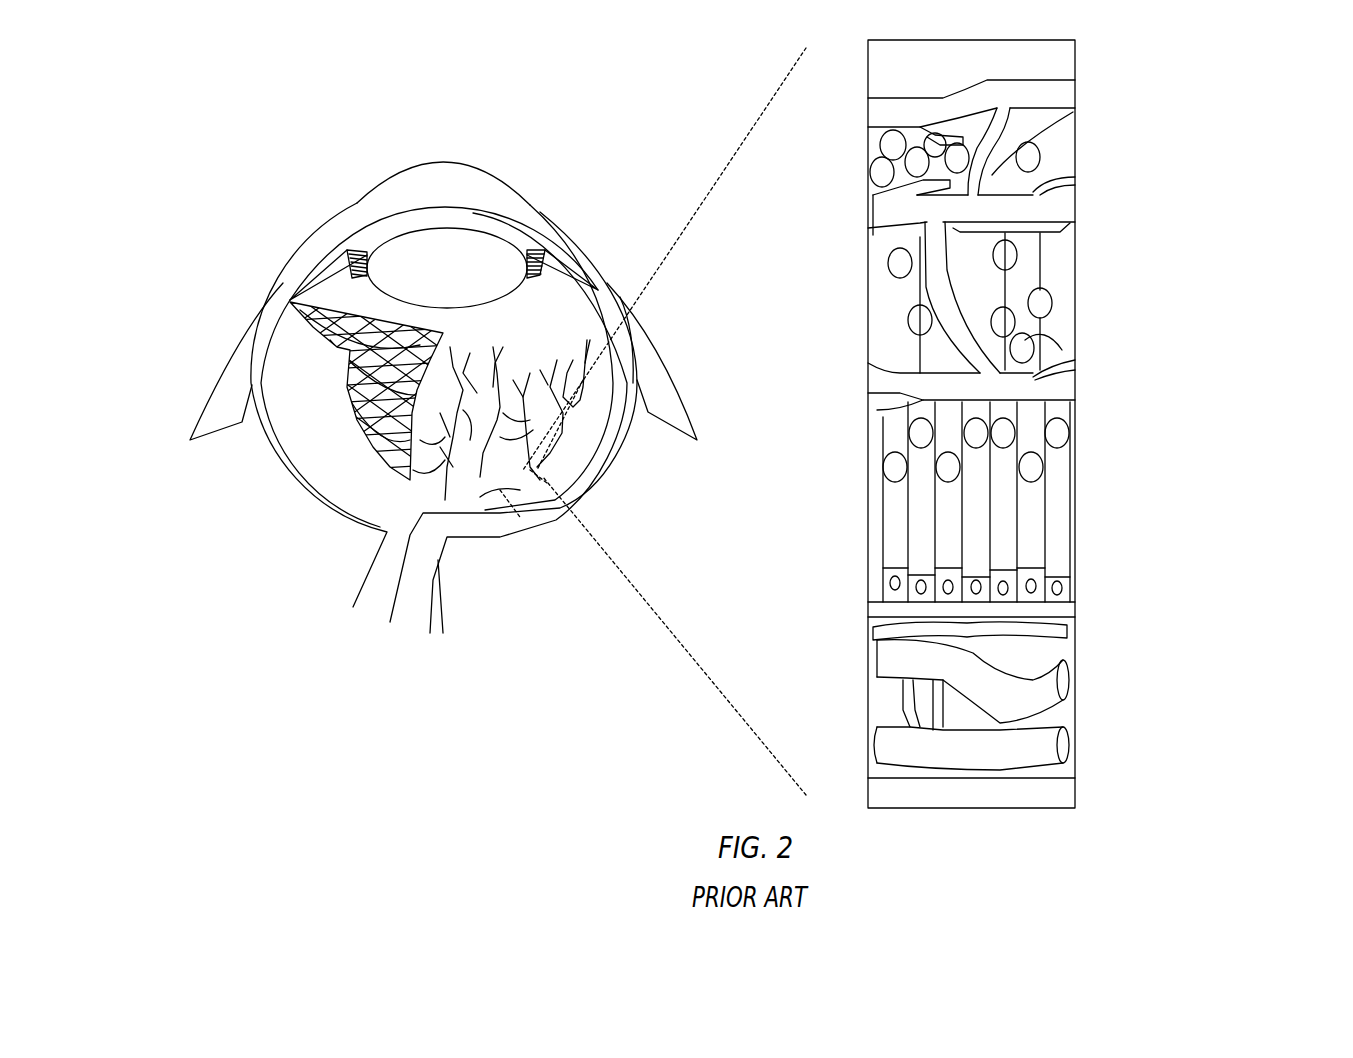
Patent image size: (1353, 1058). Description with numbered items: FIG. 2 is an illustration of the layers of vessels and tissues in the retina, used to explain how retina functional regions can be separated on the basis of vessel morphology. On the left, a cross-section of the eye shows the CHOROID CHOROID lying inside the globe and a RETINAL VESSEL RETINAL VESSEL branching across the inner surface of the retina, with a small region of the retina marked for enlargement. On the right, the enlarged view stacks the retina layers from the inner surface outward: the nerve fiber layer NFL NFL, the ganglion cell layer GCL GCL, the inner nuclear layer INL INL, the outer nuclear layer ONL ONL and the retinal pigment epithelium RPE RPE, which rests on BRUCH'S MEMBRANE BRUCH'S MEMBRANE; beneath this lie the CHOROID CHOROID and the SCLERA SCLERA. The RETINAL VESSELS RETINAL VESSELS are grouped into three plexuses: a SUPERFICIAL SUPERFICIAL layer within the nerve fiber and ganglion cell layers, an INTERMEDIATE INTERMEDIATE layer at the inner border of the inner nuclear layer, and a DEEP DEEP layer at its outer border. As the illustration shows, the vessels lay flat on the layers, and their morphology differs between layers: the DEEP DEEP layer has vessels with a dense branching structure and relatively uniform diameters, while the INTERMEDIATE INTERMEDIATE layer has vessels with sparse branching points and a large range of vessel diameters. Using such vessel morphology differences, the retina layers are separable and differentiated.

The choroid CHOROID is at (360, 443).
The retinal vessel RETINAL VESSEL is at (490, 467).
The nerve fiber layer NFL is at (855, 53).
The ganglion cell layer GCL is at (855, 110).
The inner nuclear layer INL is at (855, 242).
The outer nuclear layer ONL is at (855, 417).
The retinal pigment epithelium RPE is at (865, 602).
The Bruch's membrane BRUCH'S MEMBRANE is at (1082, 609).
The sclera SCLERA is at (1075, 792).
The superficial layer SUPERFICIAL is at (1283, 98).
The intermediate layer INTERMEDIATE is at (1283, 203).
The deep layer DEEP is at (1283, 387).
The retinal vessels RETINAL VESSELS is at (1283, 387).